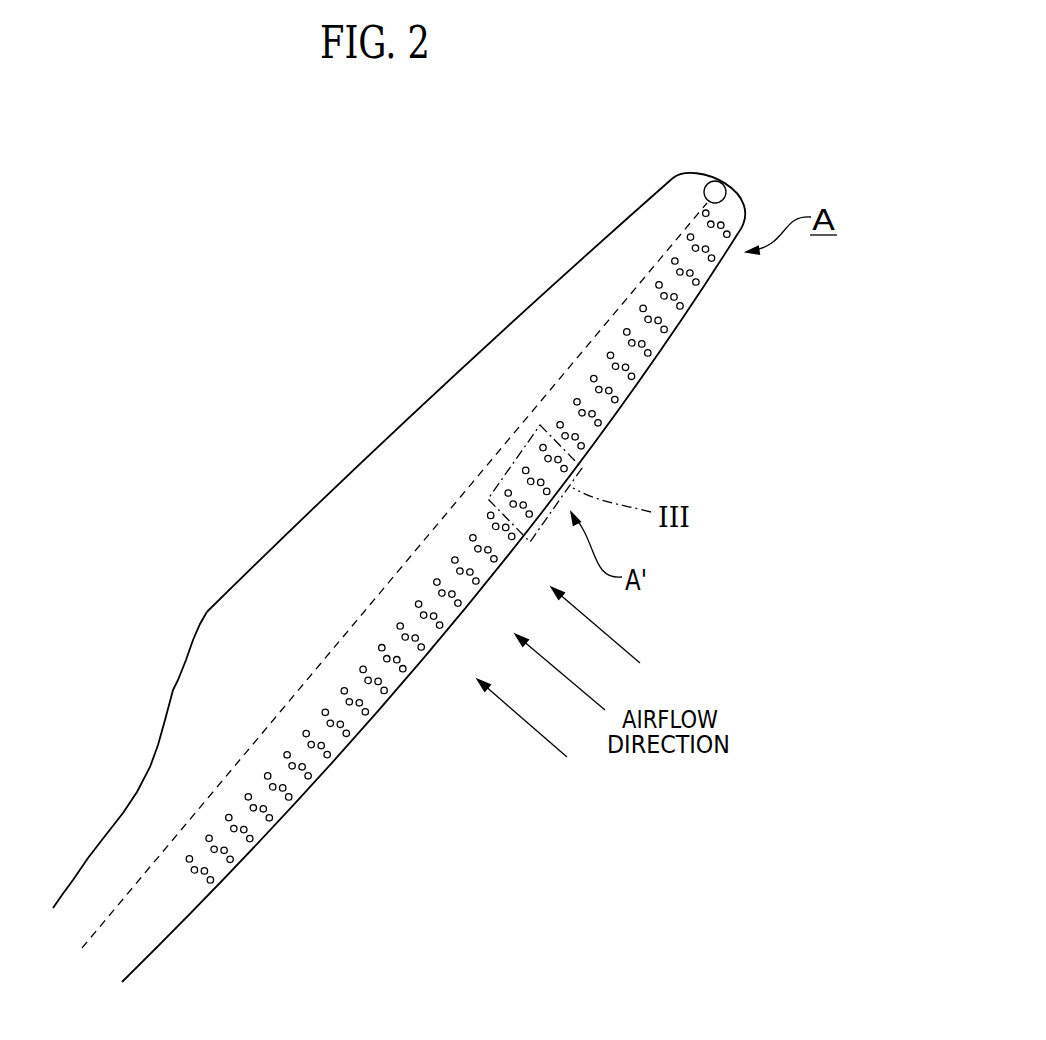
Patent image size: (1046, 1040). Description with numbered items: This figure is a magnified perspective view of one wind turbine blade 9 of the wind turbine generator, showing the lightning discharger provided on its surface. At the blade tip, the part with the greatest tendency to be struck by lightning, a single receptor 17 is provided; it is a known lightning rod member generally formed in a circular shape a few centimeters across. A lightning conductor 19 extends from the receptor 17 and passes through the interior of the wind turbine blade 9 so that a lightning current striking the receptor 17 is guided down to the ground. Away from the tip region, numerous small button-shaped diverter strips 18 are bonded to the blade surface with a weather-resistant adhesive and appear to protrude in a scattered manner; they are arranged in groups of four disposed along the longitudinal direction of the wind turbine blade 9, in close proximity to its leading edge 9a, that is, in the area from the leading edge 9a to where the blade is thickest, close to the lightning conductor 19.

The wind turbine blade 9 is at (399, 581).
The leading edge 9a is at (203, 900).
The receptor 17 is at (716, 192).
The diverter strips 18 is at (663, 320).
The lightning conductor 19 is at (607, 318).